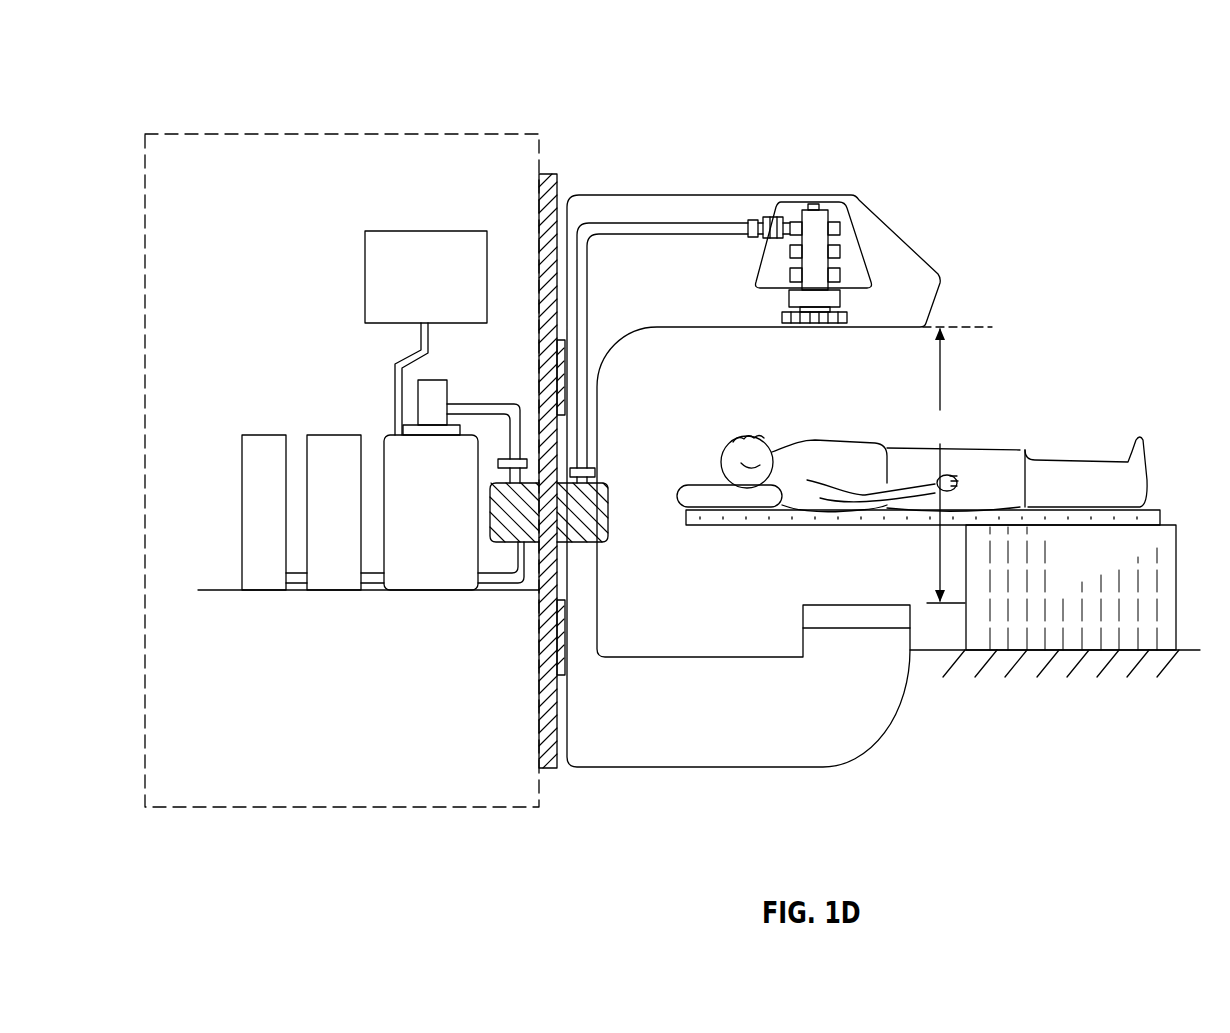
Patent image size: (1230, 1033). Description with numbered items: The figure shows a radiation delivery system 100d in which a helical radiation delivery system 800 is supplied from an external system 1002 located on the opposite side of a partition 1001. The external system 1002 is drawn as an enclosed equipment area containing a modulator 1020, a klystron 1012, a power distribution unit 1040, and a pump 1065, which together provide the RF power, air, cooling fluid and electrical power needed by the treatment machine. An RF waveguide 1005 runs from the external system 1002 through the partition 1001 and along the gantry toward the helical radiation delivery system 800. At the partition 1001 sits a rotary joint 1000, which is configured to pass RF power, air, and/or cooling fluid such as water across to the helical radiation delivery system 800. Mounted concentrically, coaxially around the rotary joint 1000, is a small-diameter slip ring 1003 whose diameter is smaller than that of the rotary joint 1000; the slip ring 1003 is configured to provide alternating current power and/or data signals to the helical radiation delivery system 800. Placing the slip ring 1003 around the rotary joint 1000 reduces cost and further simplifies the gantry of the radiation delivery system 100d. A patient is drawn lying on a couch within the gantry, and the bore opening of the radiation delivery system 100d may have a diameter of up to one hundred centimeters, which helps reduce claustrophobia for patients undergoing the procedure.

The radiation delivery system 100d is at (236, 40).
The external system 1002 is at (273, 134).
The modulator 1020 is at (423, 231).
The pump 1065 is at (265, 435).
The power distribution unit 1040 is at (333, 435).
The klystron 1012 is at (417, 588).
The RF waveguide 1005 is at (672, 225).
The helical radiation delivery system 800 is at (974, 138).
The rotary joint 1000 is at (610, 501).
The partition 1001 is at (538, 738).
The small-diameter slip ring 1003 is at (569, 678).